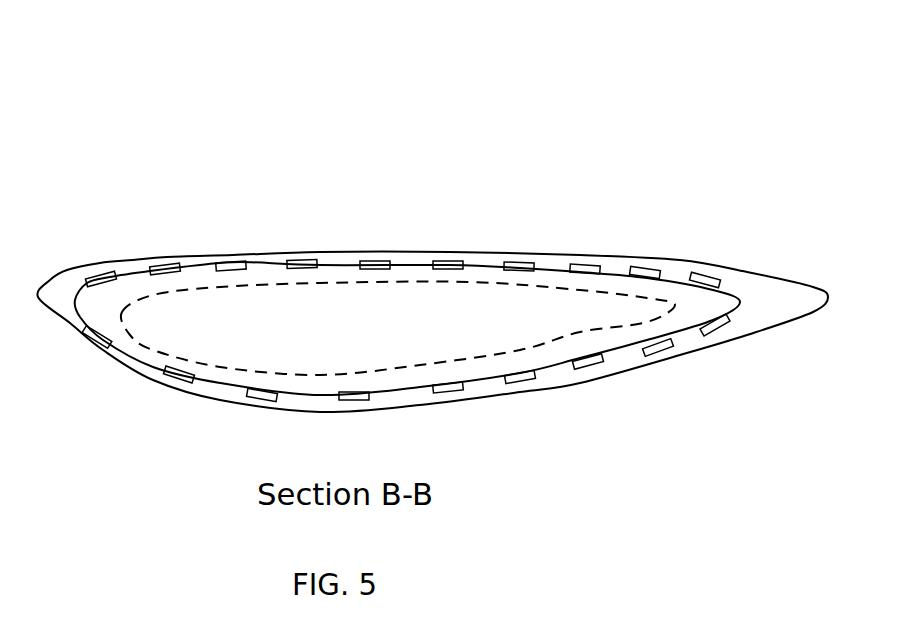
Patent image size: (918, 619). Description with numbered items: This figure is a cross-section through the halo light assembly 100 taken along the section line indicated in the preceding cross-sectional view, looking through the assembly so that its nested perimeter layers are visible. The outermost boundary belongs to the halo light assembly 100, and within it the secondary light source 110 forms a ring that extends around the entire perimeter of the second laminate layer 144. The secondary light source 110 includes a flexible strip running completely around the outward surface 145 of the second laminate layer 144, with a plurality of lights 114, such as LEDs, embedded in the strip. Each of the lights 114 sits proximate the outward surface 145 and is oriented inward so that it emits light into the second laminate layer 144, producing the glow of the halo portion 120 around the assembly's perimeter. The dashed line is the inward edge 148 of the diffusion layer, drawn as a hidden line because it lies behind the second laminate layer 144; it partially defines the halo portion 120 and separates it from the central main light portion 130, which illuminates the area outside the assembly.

The halo light assembly 100 is at (216, 59).
The secondary light source 110 is at (207, 396).
The plurality of lights 114 is at (446, 394).
The halo portion 120 is at (92, 300).
The main light portion 130 is at (396, 331).
The second laminate layer 144 is at (288, 331).
The outward surface 145 is at (133, 353).
The inward edge 148 is at (177, 291).